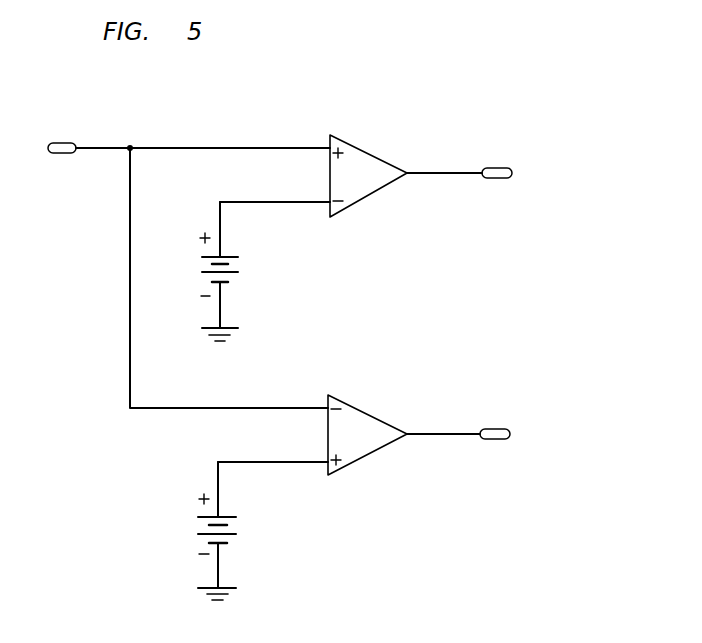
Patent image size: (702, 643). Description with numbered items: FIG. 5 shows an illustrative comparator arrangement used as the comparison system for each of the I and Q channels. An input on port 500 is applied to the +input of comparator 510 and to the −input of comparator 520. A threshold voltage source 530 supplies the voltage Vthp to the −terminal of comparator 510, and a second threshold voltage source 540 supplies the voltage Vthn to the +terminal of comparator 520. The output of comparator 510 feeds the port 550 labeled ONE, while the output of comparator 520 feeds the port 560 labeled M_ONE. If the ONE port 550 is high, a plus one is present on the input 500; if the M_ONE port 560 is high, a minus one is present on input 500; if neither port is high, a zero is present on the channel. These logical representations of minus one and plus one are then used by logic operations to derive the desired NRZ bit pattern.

The input port 500 is at (72, 146).
The comparator 510 is at (365, 157).
The comparator 520 is at (365, 417).
The first DC voltage source VTHP 530 is at (252, 271).
The second DC voltage source VTHN 540 is at (251, 531).
The output terminal ONE 550 is at (510, 169).
The output terminal M_ONE 560 is at (508, 430).